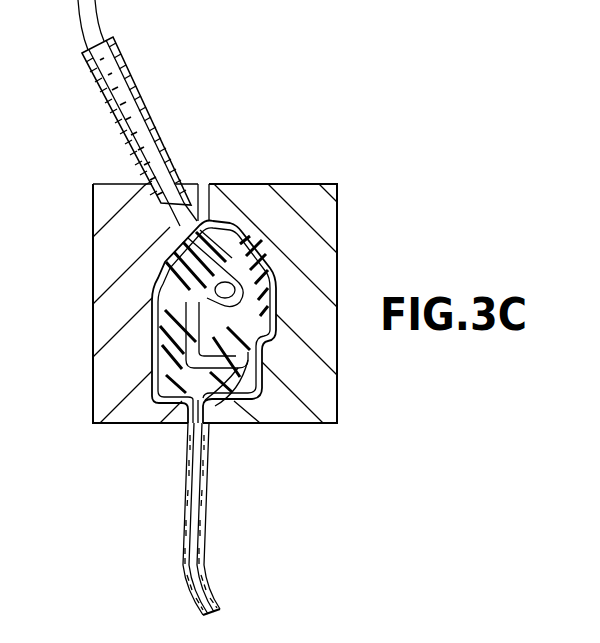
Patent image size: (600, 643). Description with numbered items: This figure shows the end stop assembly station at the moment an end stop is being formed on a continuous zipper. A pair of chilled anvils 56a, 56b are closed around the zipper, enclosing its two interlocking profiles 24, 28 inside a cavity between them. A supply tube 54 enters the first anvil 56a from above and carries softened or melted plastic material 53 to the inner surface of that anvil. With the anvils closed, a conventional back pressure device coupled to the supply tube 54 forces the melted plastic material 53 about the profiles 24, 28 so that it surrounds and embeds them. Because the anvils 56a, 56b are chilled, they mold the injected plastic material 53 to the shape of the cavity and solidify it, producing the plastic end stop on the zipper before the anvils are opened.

The profile 24 is at (234, 220).
The profile 28 is at (197, 186).
The softened/melted plastic material 53 is at (157, 167).
The supply tube 54 is at (150, 115).
The chilled anvil 56a is at (122, 411).
The chilled anvil 56b is at (302, 411).